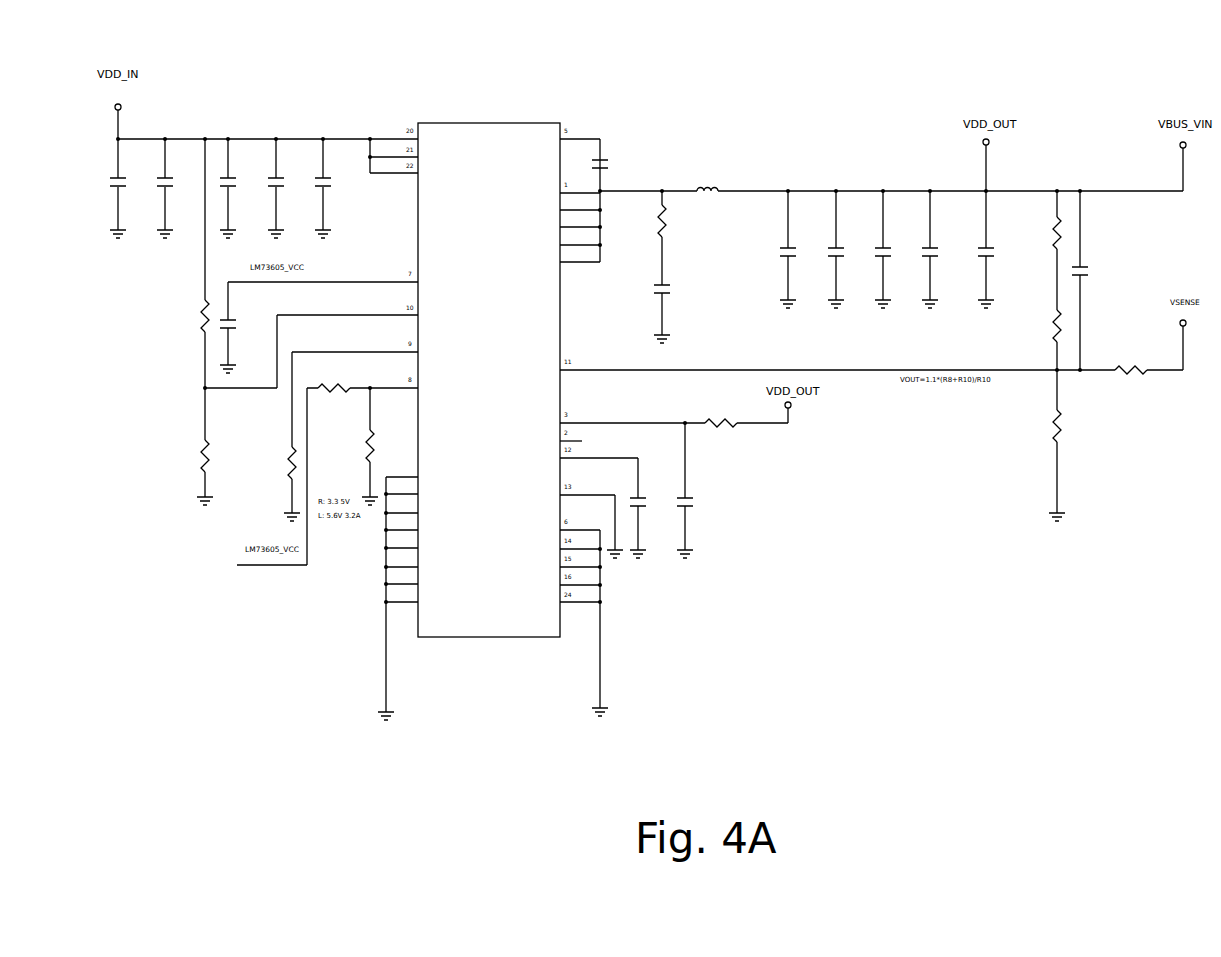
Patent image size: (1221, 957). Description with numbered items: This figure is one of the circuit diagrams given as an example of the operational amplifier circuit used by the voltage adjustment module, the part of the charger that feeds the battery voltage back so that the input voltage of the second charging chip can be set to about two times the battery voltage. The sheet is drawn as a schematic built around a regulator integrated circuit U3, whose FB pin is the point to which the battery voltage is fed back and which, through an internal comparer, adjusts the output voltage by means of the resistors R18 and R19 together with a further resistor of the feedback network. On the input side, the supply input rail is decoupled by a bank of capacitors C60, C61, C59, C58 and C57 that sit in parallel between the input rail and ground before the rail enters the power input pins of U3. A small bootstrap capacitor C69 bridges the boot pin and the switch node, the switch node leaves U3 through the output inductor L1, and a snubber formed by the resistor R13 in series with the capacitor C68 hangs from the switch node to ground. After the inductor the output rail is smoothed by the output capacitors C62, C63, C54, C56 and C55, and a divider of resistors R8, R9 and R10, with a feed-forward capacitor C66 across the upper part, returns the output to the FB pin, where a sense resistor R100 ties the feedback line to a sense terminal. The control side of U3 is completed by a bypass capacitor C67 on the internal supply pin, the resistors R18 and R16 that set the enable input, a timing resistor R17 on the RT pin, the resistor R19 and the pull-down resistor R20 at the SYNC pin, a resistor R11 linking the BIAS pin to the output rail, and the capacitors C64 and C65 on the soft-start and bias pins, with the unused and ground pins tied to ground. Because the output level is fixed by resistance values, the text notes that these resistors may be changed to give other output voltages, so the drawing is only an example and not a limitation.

The LM73605RNPR buck regulator IC U3 is at (489, 364).
The output inductor L1 is at (891, 158).
The input capacitor C60 is at (136, 188).
The input capacitor C61 is at (183, 188).
The input capacitor C59 is at (247, 188).
The input capacitor C58 is at (295, 188).
The input capacitor C57 is at (342, 188).
The bootstrap capacitor C69 is at (621, 164).
The VCC bypass capacitor C67 is at (244, 339).
The resistor R18 is at (190, 263).
The enable divider resistor R16 is at (192, 446).
The RT timing resistor R17 is at (279, 484).
The resistor R19 is at (362, 387).
The sync pull-down resistor R20 is at (357, 446).
The snubber resistor R13 is at (676, 238).
The snubber capacitor C68 is at (678, 306).
The output capacitor C62 is at (807, 249).
The output capacitor C63 is at (854, 249).
The output capacitor C54 is at (901, 249).
The output capacitor C56 is at (949, 249).
The output capacitor C55 is at (1001, 249).
The feedback resistor R8 is at (1043, 250).
The feedback resistor R9 is at (1043, 337).
The feedback resistor R10 is at (1044, 445).
The feedforward capacitor C66 is at (1096, 280).
The sense resistor R100 is at (1132, 369).
The bias resistor R11 is at (674, 421).
The soft-start capacitor C64 is at (656, 520).
The bias capacitor C65 is at (701, 490).